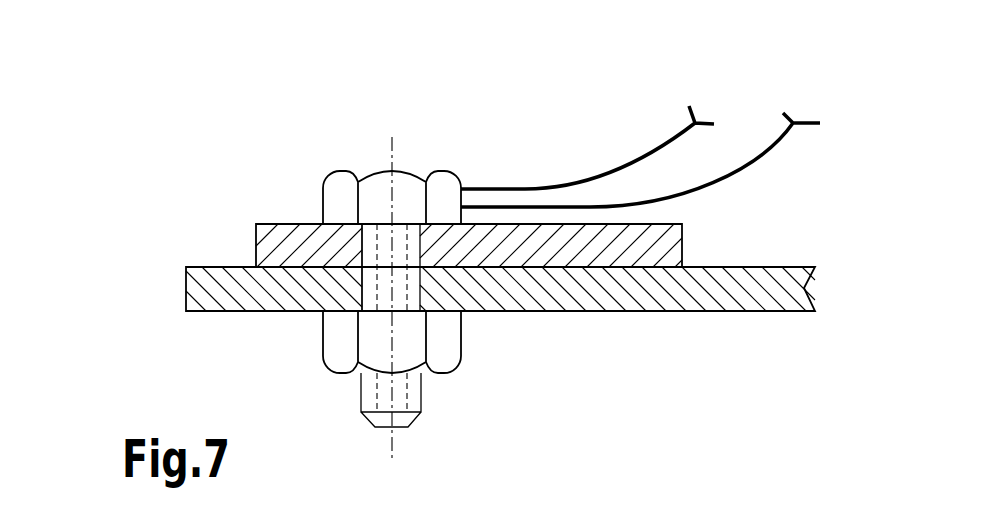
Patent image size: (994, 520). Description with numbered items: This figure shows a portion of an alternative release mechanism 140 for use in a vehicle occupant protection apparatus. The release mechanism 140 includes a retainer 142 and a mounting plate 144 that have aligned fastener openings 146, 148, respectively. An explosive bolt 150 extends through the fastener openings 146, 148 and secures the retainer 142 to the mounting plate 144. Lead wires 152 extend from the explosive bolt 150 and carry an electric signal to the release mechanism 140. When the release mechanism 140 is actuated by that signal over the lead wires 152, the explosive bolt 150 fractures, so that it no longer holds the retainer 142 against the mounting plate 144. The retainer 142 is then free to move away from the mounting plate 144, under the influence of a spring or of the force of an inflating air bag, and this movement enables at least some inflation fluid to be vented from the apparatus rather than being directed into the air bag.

The release mechanism 140 is at (552, 386).
The retainer 142 is at (262, 224).
The mounting plate 144 is at (186, 290).
The fastener opening 146 is at (360, 249).
The fastener opening 148 is at (362, 289).
The explosive bolt 150 is at (455, 172).
The lead wires 152 is at (650, 153).